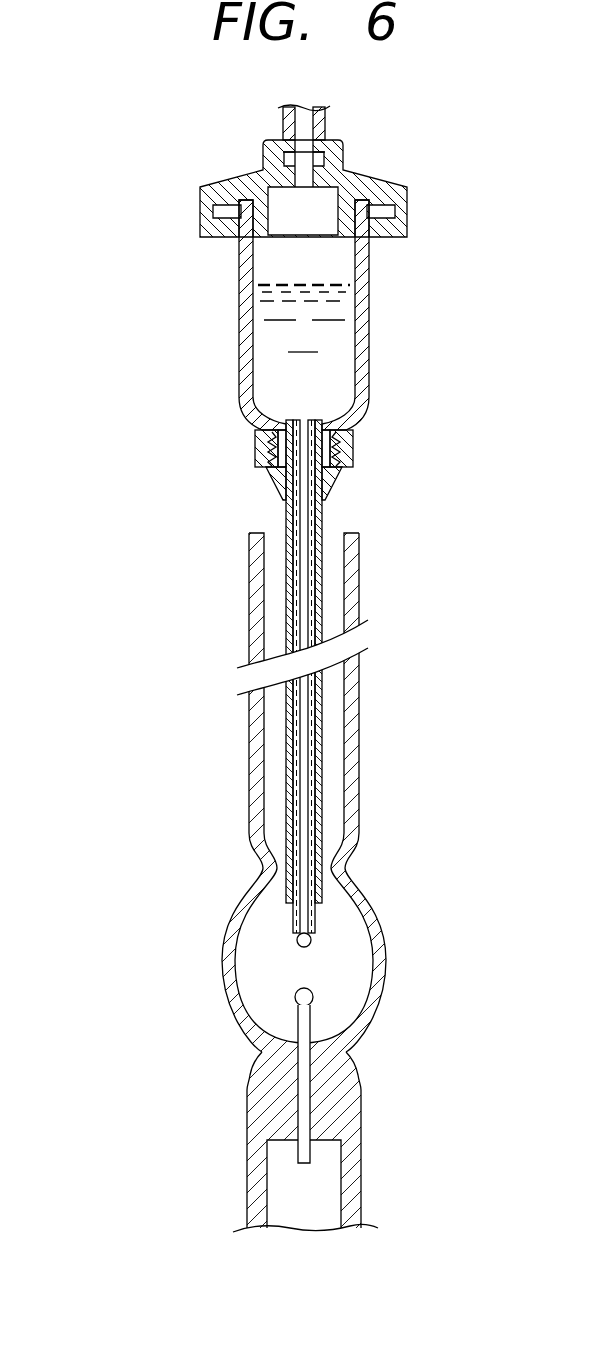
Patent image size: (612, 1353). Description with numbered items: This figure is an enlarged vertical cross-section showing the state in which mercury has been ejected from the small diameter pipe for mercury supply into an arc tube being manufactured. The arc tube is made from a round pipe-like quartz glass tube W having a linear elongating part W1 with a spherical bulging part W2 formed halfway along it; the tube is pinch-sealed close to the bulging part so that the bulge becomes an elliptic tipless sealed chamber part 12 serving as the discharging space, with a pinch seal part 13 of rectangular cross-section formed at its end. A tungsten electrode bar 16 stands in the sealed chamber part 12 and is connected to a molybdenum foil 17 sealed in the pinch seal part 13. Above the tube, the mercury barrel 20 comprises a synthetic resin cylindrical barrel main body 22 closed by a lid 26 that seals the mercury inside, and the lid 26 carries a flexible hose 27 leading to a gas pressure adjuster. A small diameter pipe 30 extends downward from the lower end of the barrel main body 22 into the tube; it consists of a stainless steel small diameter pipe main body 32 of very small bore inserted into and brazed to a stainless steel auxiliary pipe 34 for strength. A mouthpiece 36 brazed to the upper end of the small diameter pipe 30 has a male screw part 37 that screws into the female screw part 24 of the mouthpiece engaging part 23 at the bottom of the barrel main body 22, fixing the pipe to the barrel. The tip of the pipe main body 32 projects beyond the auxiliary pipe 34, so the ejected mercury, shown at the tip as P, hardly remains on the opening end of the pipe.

The flexible hose 27 is at (325, 115).
The lid 26 is at (240, 183).
The mercury barrel 20 is at (225, 315).
The barrel main body 22 is at (239, 338).
The mouthpiece engaging part 23 is at (255, 448).
The female screw part 24 is at (338, 425).
The mouthpiece 36 is at (270, 486).
The male screw part 37 is at (343, 453).
The small diameter pipe 30 is at (391, 676).
The small diameter pipe main body 32 is at (310, 810).
The auxiliary pipe 34 is at (435, 827).
The needle tip P is at (314, 941).
The quartz glass tube W is at (270, 882).
The linear elongating part W1 is at (249, 760).
The spherical bulging part W2 is at (234, 960).
The sealed chamber part 12 is at (222, 967).
The pinch seal part 13 is at (363, 1168).
The electrode bar 16 is at (313, 998).
The molybdenum foil 17 is at (275, 1185).